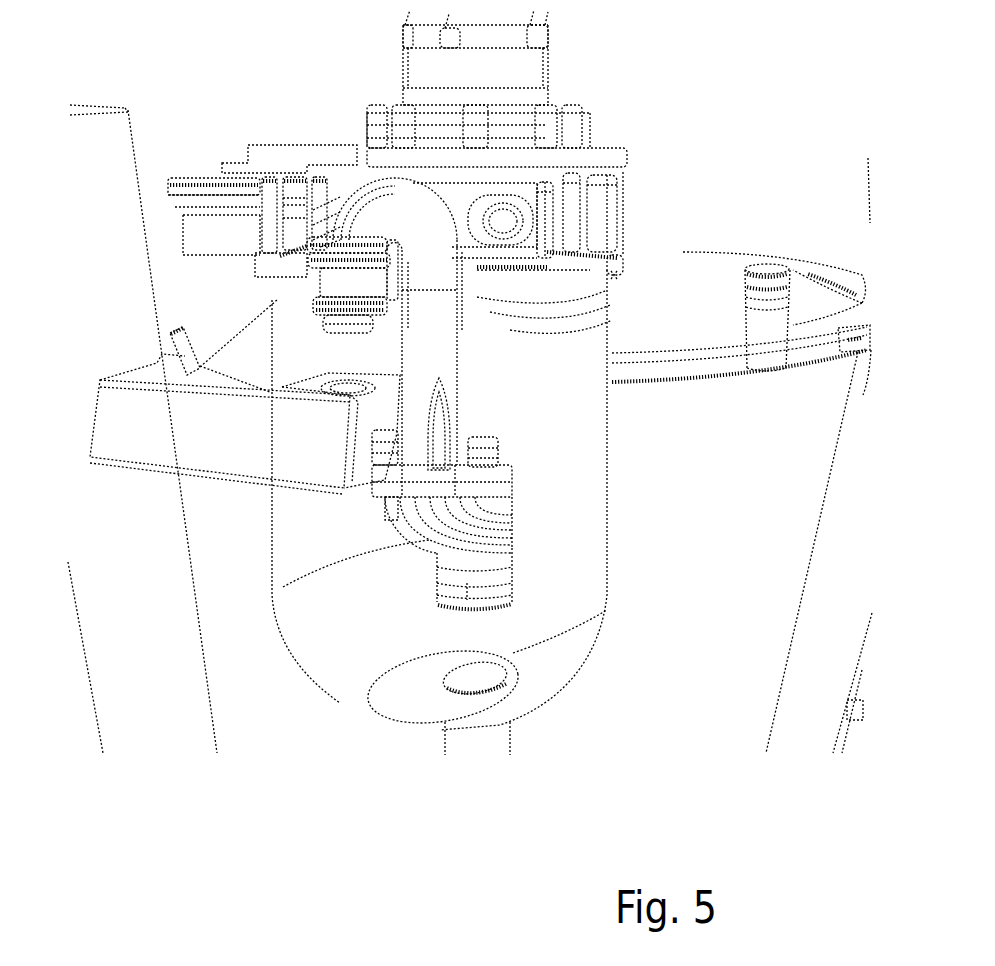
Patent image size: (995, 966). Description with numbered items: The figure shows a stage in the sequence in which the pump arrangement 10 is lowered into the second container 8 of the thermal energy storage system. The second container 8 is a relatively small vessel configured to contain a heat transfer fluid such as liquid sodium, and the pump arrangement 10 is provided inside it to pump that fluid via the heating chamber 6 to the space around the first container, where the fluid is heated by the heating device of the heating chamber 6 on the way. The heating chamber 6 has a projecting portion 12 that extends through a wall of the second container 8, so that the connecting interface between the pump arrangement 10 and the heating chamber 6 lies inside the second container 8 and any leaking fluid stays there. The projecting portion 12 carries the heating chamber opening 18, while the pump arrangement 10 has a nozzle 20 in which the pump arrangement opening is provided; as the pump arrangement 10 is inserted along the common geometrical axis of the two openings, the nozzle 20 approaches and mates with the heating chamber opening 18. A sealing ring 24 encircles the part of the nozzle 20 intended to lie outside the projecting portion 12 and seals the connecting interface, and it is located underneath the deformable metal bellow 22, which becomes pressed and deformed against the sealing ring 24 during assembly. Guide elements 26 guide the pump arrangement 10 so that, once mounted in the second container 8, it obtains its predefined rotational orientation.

The heating chamber 6 is at (142, 588).
The second container 8 is at (565, 592).
The pump arrangement 10 is at (497, 387).
The projecting portion 12 is at (315, 445).
The heating chamber opening 18 is at (350, 387).
The nozzle 20 is at (325, 325).
The deformable metal bellow 22 is at (328, 281).
The sealing ring 24 is at (313, 307).
The guide elements 26 is at (613, 215).